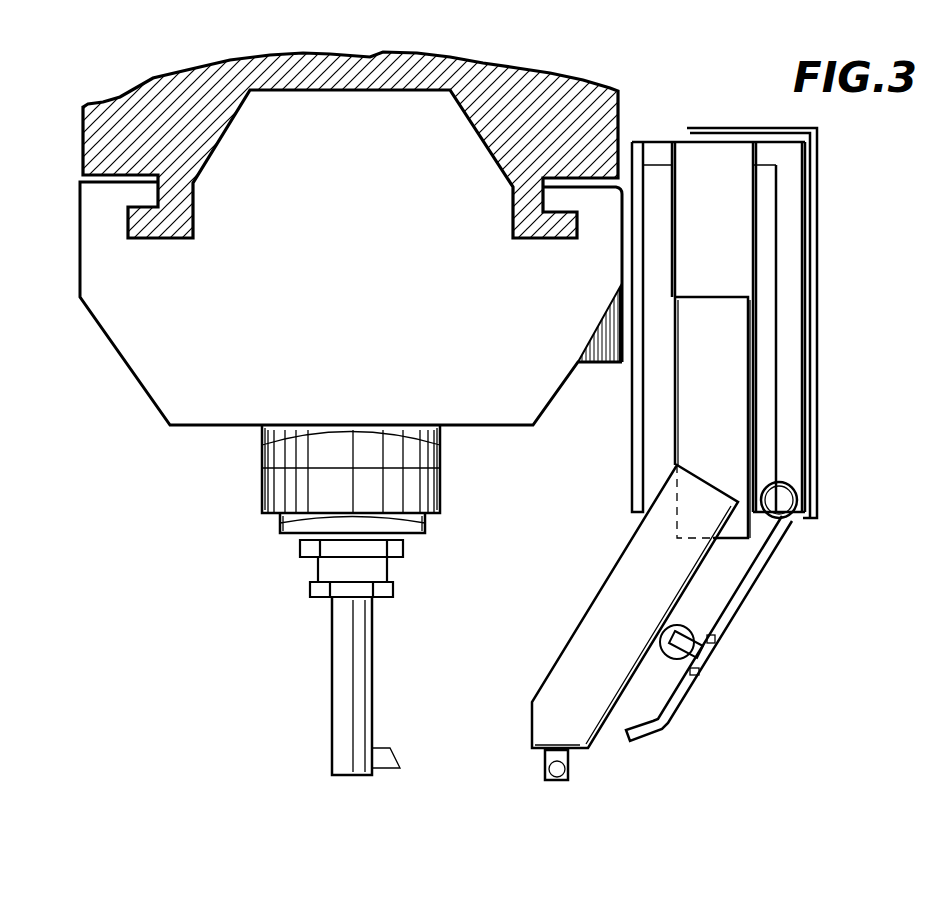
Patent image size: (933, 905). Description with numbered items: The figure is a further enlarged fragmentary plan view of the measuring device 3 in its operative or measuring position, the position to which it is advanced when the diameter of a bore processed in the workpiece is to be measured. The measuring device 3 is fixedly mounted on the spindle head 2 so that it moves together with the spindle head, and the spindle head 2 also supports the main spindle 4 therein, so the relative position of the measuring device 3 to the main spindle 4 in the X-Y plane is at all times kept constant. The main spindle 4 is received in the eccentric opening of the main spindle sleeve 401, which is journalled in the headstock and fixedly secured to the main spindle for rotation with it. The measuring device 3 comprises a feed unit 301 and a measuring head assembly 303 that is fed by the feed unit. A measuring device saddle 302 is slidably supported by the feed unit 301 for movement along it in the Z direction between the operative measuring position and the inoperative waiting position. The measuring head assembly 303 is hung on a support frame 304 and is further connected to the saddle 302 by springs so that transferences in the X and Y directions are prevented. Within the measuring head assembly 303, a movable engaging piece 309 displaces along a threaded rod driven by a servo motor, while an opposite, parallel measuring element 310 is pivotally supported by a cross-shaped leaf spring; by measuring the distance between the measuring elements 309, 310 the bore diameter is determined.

The spindle head 2 is at (480, 410).
The measuring device 3 is at (607, 552).
The main spindle 4 is at (415, 532).
The main spindle sleeve 401 is at (351, 600).
The feed unit 301 is at (737, 256).
The measuring device saddle 302 is at (730, 340).
The measuring head assembly 303 is at (548, 700).
The support frame 304 is at (635, 606).
The movable engaging piece 309 is at (570, 752).
The measuring element 310 is at (671, 631).